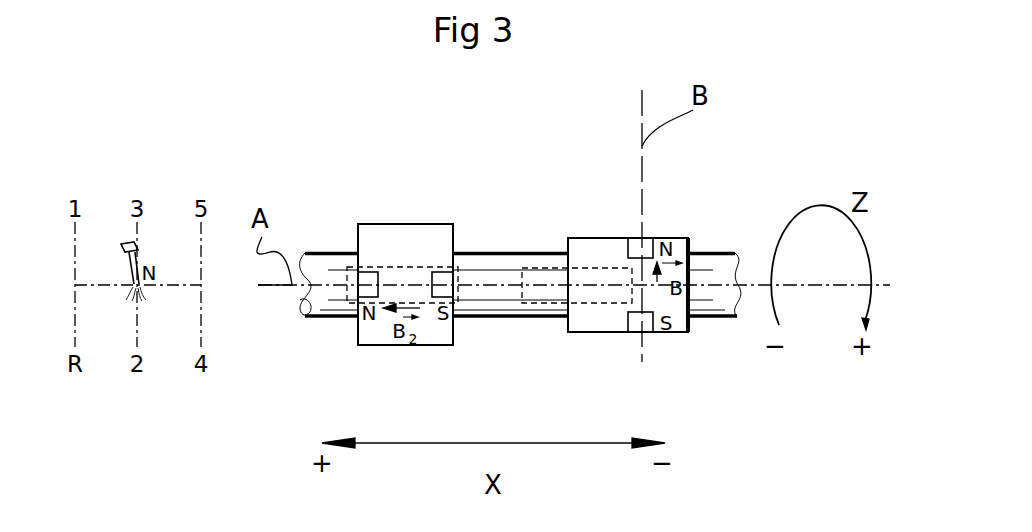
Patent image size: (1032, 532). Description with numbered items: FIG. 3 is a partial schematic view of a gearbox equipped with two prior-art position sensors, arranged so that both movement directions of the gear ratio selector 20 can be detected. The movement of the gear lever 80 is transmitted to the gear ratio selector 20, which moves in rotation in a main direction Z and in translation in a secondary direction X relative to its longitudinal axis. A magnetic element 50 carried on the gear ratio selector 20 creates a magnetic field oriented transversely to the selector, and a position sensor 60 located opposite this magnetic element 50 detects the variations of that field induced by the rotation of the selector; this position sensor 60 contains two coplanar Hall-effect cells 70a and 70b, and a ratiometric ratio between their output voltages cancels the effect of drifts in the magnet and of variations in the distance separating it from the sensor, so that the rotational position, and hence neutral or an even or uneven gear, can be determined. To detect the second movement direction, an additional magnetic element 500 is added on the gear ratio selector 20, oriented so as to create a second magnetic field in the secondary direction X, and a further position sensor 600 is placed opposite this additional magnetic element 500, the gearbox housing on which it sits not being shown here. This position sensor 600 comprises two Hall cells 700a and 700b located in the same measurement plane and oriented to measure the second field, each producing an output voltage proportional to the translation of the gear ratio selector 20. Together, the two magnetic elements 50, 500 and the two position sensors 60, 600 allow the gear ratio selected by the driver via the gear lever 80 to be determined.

The gear ratio selector 20 is at (703, 263).
The magnetic element 50 is at (587, 288).
The position sensor 60 is at (583, 248).
The Hall-effect cell 70a is at (650, 243).
The Hall-effect cell 70b is at (650, 327).
The gear lever 80 is at (128, 243).
The additional magnetic element 500 is at (412, 283).
The position sensor 600 is at (377, 237).
The Hall cell 700a is at (368, 278).
The Hall cell 700b is at (441, 276).